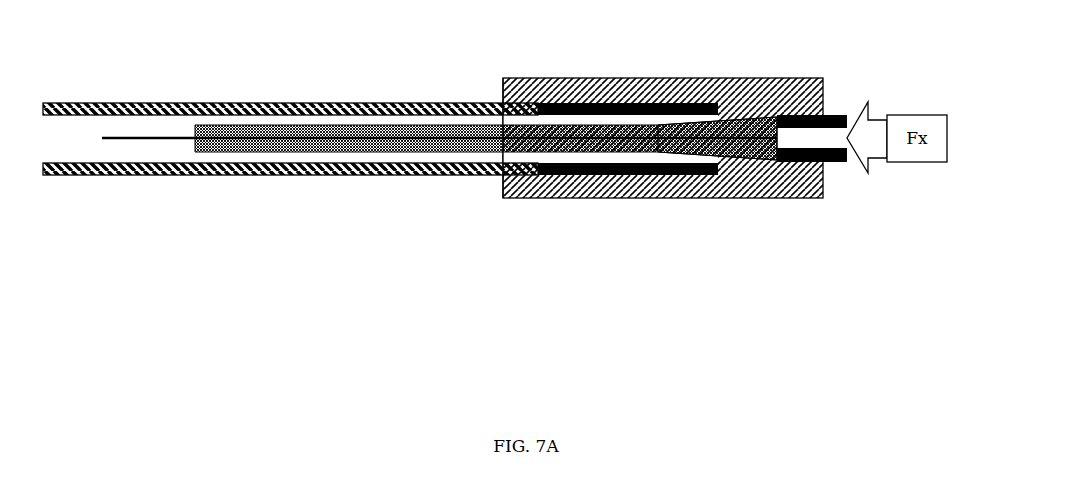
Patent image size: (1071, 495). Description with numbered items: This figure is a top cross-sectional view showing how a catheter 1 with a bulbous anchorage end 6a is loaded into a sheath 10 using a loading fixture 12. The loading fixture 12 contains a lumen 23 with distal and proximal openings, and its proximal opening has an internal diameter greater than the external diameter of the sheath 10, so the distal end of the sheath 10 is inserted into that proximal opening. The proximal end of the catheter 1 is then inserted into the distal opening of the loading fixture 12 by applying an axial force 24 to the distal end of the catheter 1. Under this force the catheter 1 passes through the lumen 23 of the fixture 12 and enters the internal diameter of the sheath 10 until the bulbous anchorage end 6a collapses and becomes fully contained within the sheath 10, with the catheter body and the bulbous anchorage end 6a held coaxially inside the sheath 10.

The catheter 1 is at (276, 153).
The sheath 10 is at (457, 177).
The lumen 23 is at (504, 178).
The bulbous anchorage end 6a is at (735, 153).
The loading fixture 12 is at (778, 200).
The axial force 24 is at (876, 164).